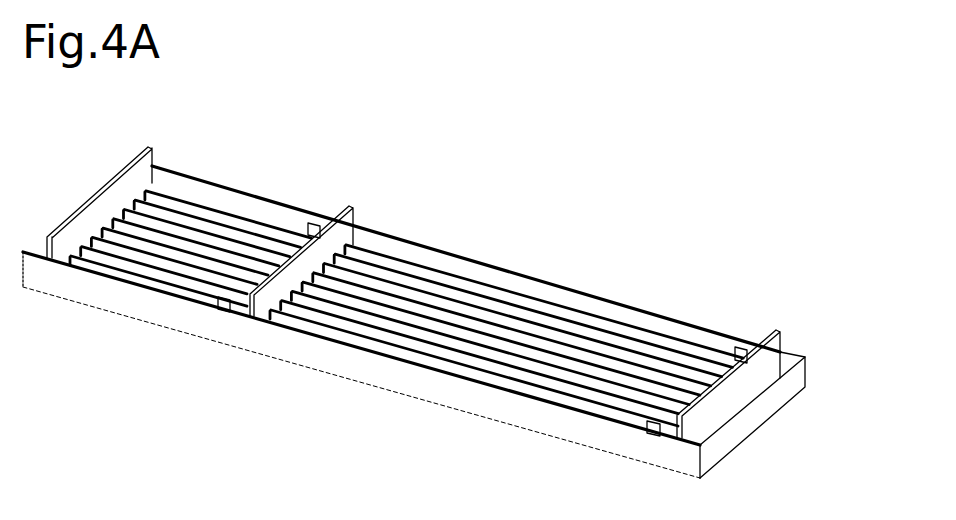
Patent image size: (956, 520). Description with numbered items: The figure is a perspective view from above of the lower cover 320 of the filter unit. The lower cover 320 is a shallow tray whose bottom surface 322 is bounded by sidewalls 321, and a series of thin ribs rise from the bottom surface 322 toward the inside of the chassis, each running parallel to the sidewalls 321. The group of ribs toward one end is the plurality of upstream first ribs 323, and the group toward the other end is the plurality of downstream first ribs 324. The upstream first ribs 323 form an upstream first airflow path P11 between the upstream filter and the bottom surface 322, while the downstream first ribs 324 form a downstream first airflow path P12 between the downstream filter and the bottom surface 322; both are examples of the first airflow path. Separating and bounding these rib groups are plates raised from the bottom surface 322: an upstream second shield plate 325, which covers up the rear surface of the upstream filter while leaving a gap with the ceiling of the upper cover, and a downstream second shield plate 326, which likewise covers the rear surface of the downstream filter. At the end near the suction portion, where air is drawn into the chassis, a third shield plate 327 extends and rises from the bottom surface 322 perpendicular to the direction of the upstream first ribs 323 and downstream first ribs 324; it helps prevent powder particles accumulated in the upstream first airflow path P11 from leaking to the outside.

The lower cover 320 is at (451, 283).
The sidewalls 321 is at (290, 350).
The bottom surface 322 is at (732, 435).
The upstream first ribs 323 is at (506, 287).
The downstream first ribs 324 is at (199, 187).
The upstream second shield plate 325 is at (332, 250).
The downstream second shield plate 326 is at (130, 190).
The third shield plate 327 is at (745, 385).
The upstream first airflow path P11 is at (538, 328).
The downstream first airflow path P12 is at (242, 243).